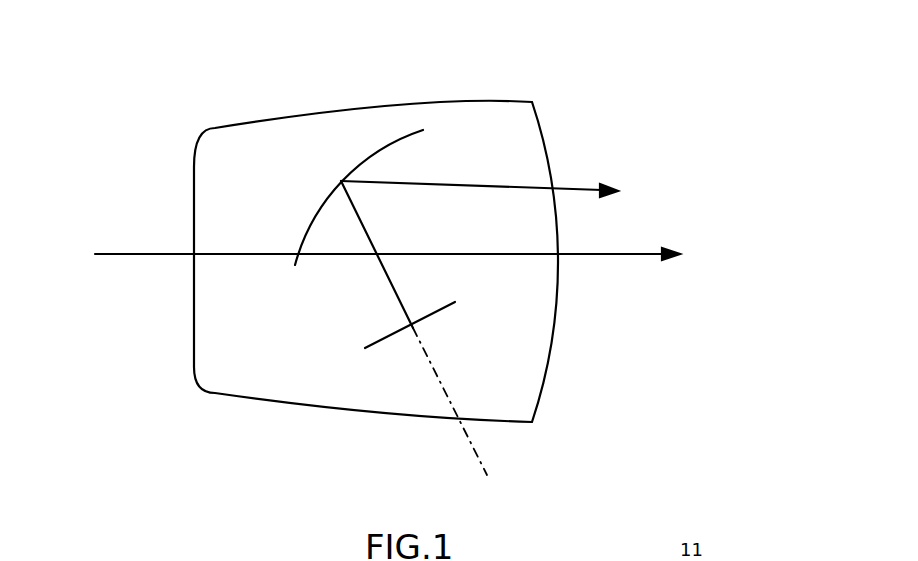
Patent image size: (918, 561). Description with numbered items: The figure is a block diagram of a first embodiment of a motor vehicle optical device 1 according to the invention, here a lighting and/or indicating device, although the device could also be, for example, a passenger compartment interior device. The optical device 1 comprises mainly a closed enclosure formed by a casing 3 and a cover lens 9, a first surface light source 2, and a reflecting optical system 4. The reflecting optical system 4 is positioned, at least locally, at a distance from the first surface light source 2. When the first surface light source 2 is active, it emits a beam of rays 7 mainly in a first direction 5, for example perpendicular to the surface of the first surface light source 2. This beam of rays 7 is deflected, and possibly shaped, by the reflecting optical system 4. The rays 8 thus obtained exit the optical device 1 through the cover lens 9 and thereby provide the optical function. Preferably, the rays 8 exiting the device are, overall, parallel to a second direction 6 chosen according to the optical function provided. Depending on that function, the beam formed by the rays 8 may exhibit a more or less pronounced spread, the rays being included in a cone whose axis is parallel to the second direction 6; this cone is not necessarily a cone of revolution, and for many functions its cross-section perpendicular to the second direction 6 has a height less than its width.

The optical device 1 is at (618, 108).
The first surface light source 2 is at (390, 336).
The casing 3 is at (237, 400).
The reflecting optical system 4 is at (312, 215).
The first direction 5 is at (465, 432).
The second direction 6 is at (630, 258).
The beam of rays 7 is at (397, 292).
The rays 8 is at (574, 190).
The cover lens 9 is at (552, 362).